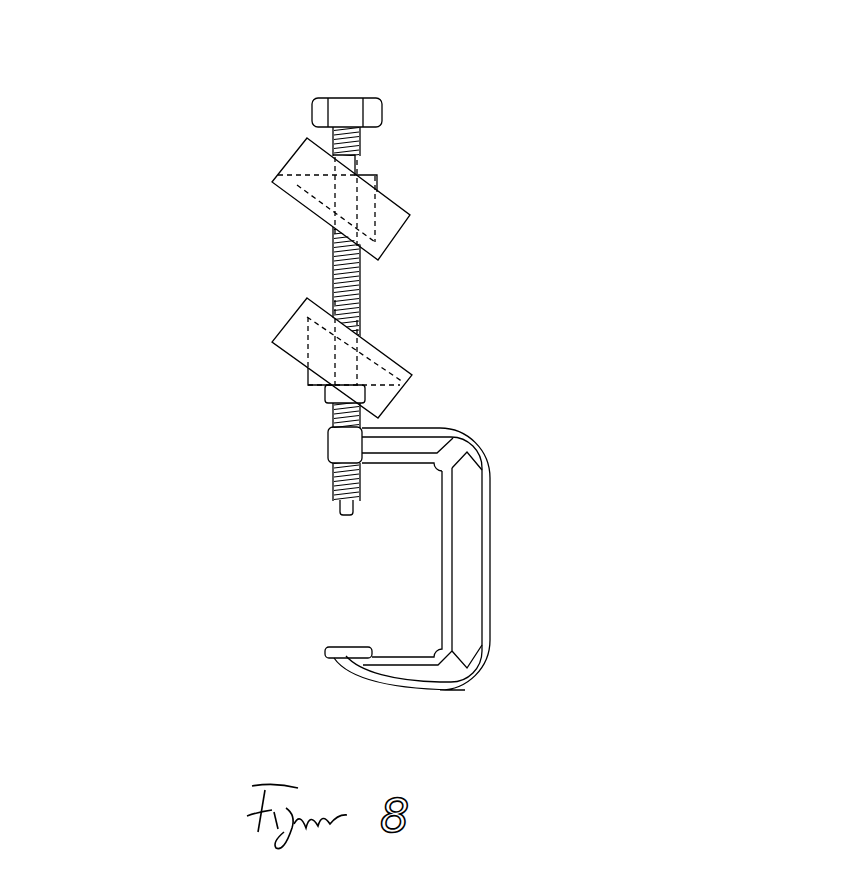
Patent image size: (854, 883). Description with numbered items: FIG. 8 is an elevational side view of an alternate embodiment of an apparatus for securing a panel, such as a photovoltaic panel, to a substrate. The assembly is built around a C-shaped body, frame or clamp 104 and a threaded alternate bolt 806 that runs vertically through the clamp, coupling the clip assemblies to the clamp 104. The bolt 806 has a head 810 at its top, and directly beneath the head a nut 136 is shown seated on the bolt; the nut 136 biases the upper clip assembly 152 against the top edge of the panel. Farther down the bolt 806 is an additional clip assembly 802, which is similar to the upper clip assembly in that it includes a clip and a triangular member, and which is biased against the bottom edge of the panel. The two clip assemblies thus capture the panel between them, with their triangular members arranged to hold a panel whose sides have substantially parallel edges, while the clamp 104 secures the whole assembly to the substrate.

The bolt head 810 is at (376, 110).
The nut 136 is at (365, 164).
The upper clamp plate 152 is at (411, 208).
The alternate bolt 806 is at (331, 260).
The additional clip assembly 802 is at (249, 352).
The C-shaped clamp 104 is at (522, 524).